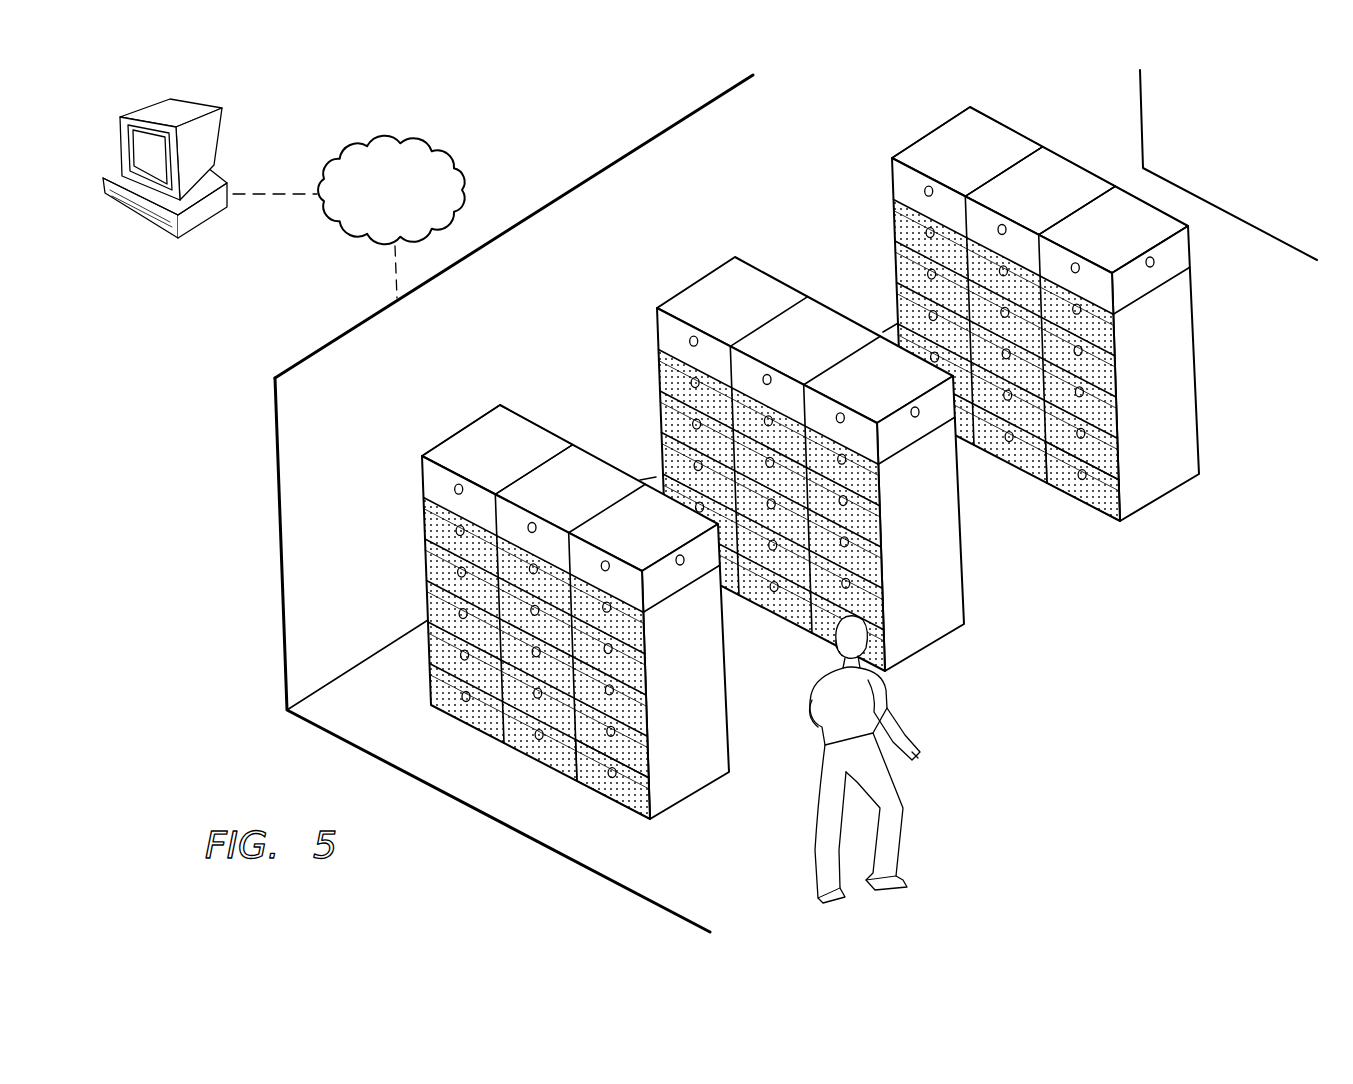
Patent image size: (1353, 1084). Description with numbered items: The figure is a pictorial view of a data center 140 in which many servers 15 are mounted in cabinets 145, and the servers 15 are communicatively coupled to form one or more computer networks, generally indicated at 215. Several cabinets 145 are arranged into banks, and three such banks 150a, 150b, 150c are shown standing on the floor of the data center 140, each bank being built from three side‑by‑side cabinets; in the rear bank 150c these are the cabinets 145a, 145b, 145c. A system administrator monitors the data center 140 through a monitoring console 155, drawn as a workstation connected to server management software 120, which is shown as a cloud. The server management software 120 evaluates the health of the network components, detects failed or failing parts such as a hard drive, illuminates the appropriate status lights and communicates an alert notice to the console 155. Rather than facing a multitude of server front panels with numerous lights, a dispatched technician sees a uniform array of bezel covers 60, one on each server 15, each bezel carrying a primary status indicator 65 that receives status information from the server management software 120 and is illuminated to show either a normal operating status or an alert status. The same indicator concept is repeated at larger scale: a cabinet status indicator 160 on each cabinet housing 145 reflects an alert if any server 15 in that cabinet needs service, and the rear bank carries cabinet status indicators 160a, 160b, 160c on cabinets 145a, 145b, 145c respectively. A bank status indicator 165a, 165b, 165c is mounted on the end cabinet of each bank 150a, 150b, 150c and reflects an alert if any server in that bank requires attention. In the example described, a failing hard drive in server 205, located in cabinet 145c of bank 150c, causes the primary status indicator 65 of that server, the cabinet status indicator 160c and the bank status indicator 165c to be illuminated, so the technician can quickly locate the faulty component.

The server 15 is at (639, 811).
The bezel cover 60 is at (592, 770).
The primary status indicator 65 is at (613, 780).
The server management software 120 is at (420, 141).
The data center 140 is at (580, 182).
The cabinet 145 is at (478, 420).
The cabinet 145a is at (952, 122).
The cabinet 145b is at (1062, 162).
The cabinet 145c is at (1163, 213).
The bank 150a is at (549, 616).
The bank 150b is at (784, 453).
The bank 150c is at (1028, 314).
The monitoring console 155 is at (140, 217).
The cabinet status indicator 160 is at (453, 489).
The cabinet status indicator 160a is at (930, 187).
The cabinet status indicator 160b is at (1002, 227).
The cabinet status indicator 160c is at (1077, 265).
The bank status indicator 165a is at (682, 571).
The bank status indicator 165b is at (917, 416).
The bank status indicator 165c is at (1153, 270).
The server 205 is at (1084, 498).
The computer network 215 is at (300, 340).